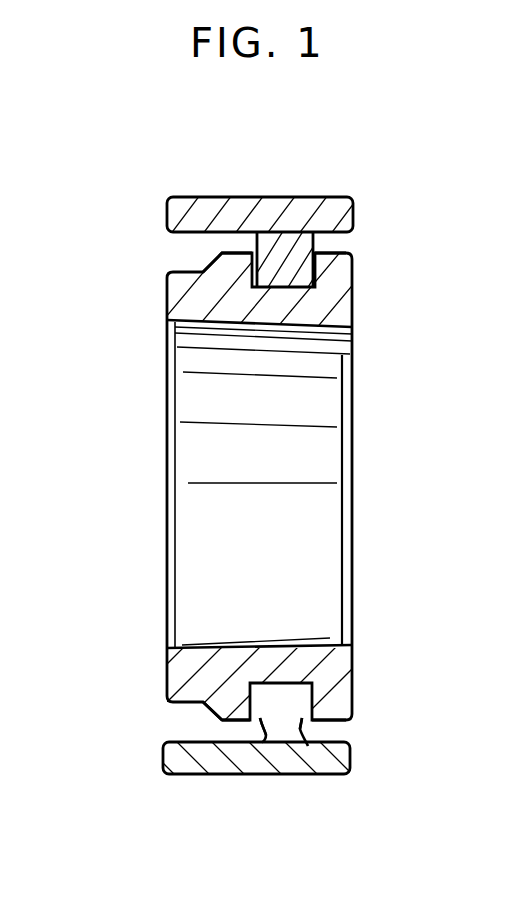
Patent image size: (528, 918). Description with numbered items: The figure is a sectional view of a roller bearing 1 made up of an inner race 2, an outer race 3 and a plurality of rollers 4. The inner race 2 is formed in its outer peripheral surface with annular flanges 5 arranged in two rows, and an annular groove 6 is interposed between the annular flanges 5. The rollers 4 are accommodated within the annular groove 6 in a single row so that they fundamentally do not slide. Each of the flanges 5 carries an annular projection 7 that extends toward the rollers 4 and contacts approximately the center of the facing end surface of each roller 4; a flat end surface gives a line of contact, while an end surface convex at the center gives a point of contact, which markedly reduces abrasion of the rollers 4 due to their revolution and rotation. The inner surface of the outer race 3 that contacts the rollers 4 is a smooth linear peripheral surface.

The roller bearing 1 is at (345, 189).
The inner race 2 is at (355, 310).
The outer race 3 is at (176, 197).
The roller 4 is at (302, 246).
The annular flange 5 is at (236, 263).
The annular groove 6 is at (282, 695).
The annular projection 7 is at (266, 735).